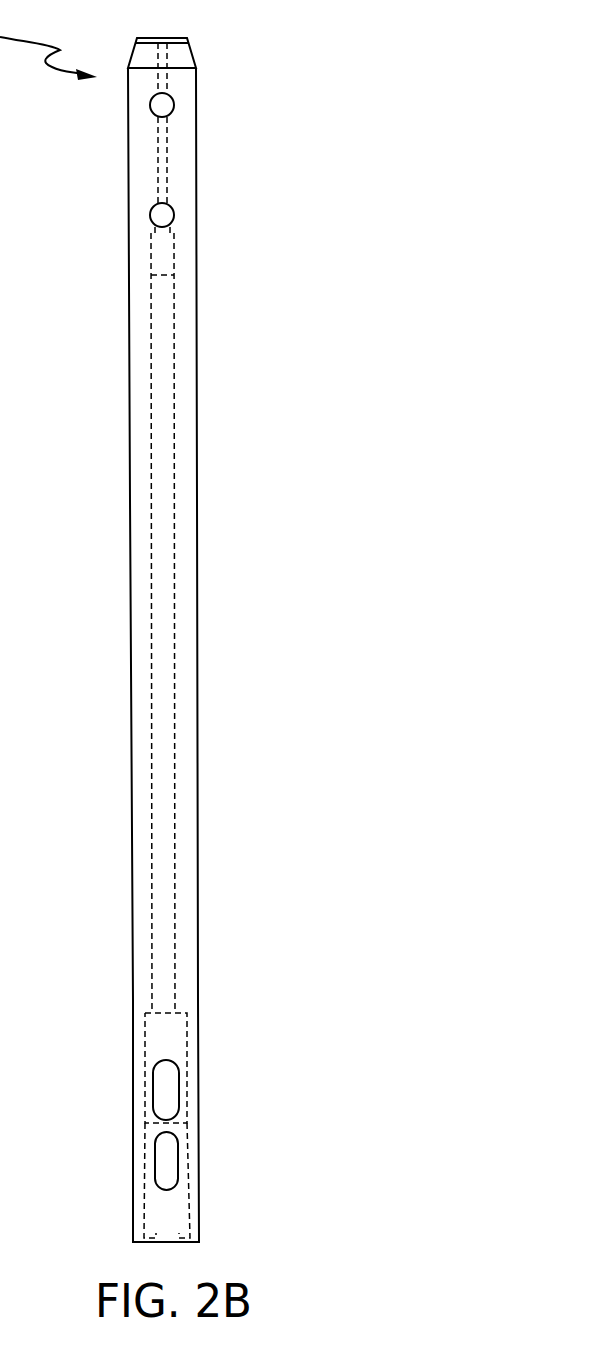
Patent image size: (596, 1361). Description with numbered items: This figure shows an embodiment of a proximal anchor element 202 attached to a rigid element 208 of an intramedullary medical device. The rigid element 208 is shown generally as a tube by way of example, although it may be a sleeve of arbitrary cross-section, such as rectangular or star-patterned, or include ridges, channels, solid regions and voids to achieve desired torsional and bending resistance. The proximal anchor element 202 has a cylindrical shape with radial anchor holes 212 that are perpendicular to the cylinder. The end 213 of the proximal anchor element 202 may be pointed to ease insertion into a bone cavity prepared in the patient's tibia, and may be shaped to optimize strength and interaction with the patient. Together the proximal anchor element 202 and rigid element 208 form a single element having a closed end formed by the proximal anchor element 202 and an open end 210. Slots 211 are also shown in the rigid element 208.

The proximal anchor element 202 is at (187, 168).
The rigid element 208 is at (185, 562).
The open end 210 is at (158, 1245).
The slots 211 is at (178, 1092).
The radial anchor holes 212 is at (162, 105).
The end of the proximal anchor element 213 is at (193, 36).